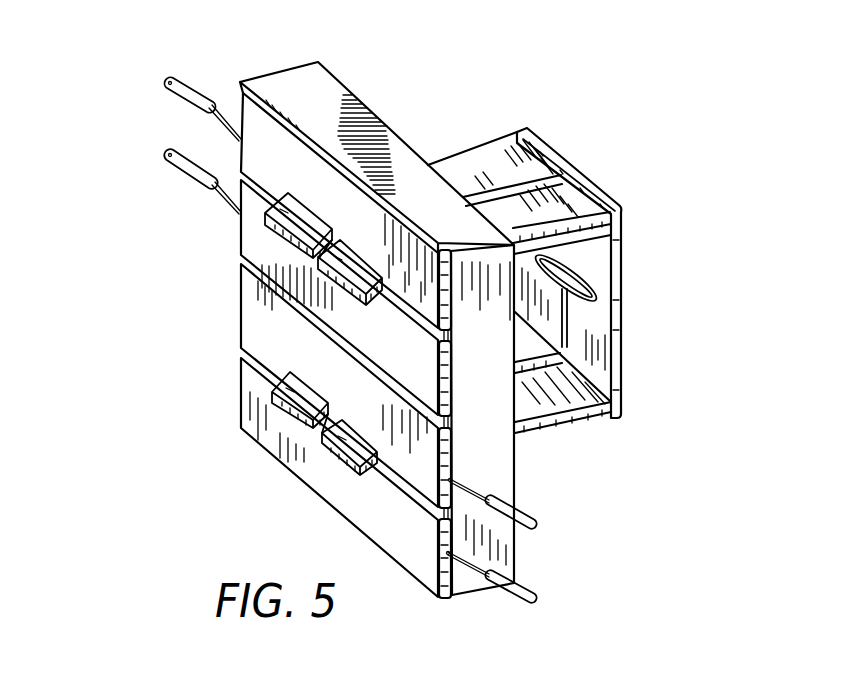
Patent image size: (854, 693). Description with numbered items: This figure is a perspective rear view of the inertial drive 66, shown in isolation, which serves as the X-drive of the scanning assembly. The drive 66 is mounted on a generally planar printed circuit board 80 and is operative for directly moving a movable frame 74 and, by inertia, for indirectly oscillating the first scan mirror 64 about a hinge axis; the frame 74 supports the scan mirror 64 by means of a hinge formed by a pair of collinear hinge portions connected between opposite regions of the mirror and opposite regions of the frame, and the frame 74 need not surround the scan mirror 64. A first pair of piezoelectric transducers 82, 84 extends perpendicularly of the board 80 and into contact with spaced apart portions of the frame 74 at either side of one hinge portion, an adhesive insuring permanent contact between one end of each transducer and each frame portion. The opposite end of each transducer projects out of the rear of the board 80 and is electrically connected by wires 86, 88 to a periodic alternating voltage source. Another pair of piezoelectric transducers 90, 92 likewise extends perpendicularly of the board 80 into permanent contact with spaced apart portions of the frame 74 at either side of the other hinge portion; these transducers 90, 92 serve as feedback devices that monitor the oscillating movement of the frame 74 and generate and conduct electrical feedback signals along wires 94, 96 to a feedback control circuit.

The first scan mirror 64 is at (583, 300).
The inertial drive 66 is at (575, 117).
The movable frame 74 is at (593, 262).
The printed circuit board 80 is at (242, 82).
The piezoelectric transducer 82 is at (570, 207).
The piezoelectric transducer 84 is at (490, 160).
The wire 86 is at (193, 92).
The wire 88 is at (184, 149).
The piezoelectric transducer 90 is at (600, 306).
The piezoelectric transducer 92 is at (520, 346).
The wire 94 is at (533, 527).
The wire 96 is at (533, 603).